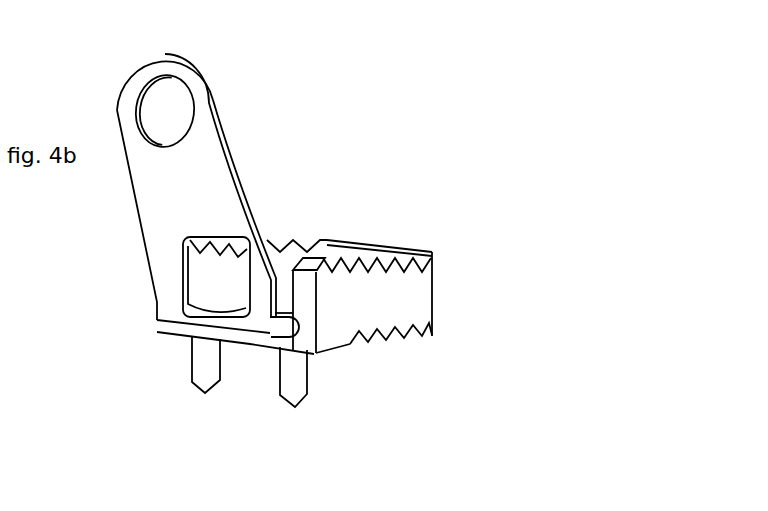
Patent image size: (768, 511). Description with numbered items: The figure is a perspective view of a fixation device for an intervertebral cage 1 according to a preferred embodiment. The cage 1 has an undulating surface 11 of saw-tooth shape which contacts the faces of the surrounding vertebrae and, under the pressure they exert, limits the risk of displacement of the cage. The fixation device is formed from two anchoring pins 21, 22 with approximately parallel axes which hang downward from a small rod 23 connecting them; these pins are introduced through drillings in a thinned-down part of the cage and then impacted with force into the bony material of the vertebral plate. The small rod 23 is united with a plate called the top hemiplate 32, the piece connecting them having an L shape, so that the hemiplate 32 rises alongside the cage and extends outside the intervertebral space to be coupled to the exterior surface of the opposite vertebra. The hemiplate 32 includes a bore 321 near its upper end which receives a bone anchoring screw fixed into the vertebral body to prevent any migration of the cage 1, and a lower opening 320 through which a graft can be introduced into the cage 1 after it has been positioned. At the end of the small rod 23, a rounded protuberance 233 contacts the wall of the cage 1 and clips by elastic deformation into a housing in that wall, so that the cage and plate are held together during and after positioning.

The intervertebral cage 1 is at (408, 309).
The undulating surface 11 is at (403, 342).
The anchoring pin 21 is at (203, 367).
The anchoring pin 22 is at (295, 383).
The small rod 23 is at (233, 307).
The rounded protuberance 233 is at (282, 322).
The top hemiplate 32 is at (200, 175).
The opening 320 is at (183, 258).
The bore 321 is at (168, 108).